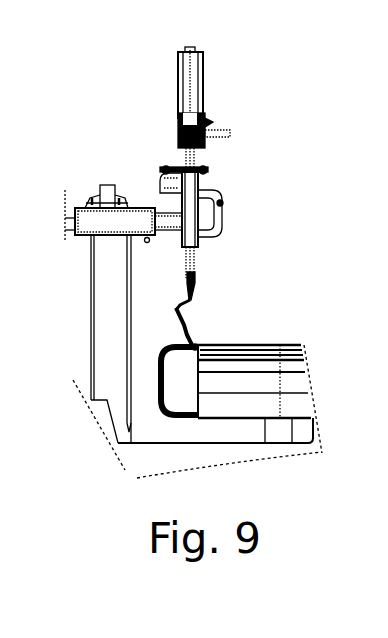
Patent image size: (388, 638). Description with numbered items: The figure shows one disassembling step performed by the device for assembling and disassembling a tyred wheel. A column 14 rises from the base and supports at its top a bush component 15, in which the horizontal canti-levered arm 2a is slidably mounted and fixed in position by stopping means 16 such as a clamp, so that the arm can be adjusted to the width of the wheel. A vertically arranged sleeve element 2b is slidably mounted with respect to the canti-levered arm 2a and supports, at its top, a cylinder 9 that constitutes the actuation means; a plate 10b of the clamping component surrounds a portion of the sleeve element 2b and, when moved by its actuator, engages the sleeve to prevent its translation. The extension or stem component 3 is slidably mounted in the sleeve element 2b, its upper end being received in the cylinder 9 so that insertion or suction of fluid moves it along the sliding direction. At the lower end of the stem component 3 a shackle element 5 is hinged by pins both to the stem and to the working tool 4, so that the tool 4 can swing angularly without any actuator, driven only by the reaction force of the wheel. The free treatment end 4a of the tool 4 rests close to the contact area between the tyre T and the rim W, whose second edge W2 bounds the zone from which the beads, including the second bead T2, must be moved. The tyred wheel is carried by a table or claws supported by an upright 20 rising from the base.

The cylinder 9 is at (205, 78).
The sleeve element 2b is at (197, 163).
The canti-levered arm 2a is at (173, 212).
The plate 10b is at (181, 166).
The bush component 15 is at (90, 237).
The stopping means 16 is at (104, 192).
The column 14 is at (92, 322).
The extension or stem component 3 is at (194, 300).
The shackle element 5 is at (183, 304).
The working tool 4 is at (182, 325).
The treatment end 4a is at (216, 330).
The tyre T is at (178, 427).
The rim W is at (252, 343).
The upright 20 is at (293, 431).
The second bead T2 is at (183, 422).
The second edge W2 is at (198, 422).